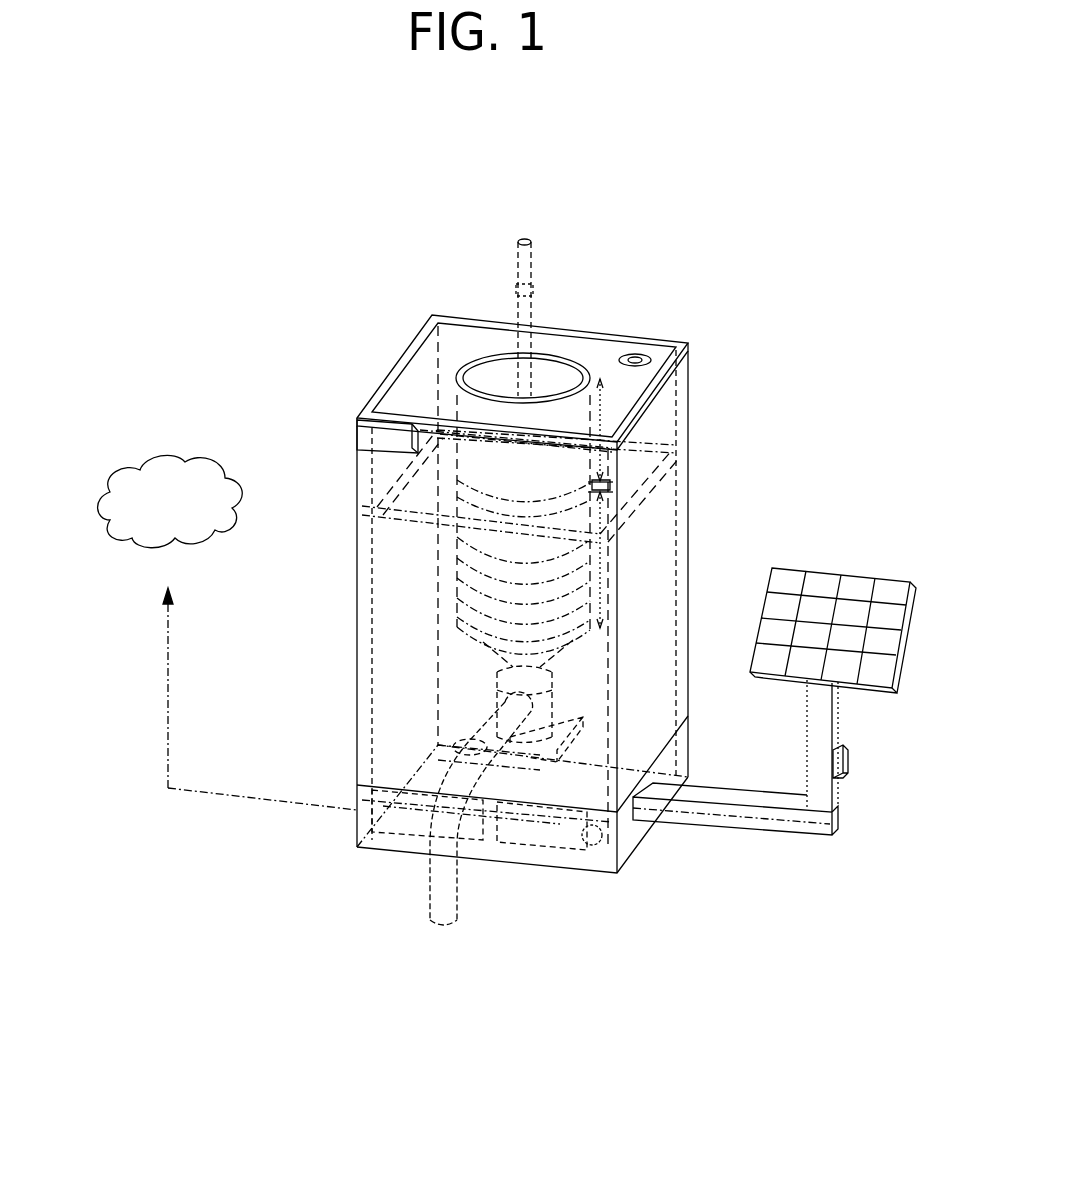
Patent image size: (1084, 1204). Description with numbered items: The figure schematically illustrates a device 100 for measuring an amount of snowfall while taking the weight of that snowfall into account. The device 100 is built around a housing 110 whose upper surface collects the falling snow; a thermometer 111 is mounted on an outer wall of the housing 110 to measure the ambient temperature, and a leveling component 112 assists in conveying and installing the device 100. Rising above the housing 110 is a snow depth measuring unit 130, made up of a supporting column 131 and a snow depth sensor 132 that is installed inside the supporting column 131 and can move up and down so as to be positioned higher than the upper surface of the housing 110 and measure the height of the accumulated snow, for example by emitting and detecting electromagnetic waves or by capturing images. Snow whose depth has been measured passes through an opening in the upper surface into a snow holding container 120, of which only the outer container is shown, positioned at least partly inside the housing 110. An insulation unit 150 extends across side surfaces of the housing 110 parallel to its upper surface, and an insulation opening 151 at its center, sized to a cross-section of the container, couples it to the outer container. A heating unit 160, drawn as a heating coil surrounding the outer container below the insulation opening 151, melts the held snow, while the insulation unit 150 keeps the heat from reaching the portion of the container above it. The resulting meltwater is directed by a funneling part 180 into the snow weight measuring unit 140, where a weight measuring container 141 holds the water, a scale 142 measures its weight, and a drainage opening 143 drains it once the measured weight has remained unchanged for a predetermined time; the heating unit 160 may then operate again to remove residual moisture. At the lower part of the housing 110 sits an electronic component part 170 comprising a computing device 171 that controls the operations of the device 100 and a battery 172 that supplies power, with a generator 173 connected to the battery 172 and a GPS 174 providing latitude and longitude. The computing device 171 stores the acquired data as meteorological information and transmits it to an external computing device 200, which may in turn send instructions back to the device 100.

The device for measuring an amount of snowfall 100 is at (312, 202).
The housing 110 is at (358, 418).
The thermometer 111 is at (357, 434).
The leveling component 112 is at (640, 352).
The snow holding container 120 is at (470, 404).
The snow depth measuring unit 130 is at (630, 295).
The supporting column 131 is at (530, 260).
The snow depth sensor 132 is at (530, 294).
The snow weight measuring unit 140 is at (152, 997).
The weight measuring container 141 is at (495, 707).
The scale 142 is at (440, 797).
The drainage opening 143 is at (443, 873).
The insulation unit 150 is at (676, 447).
The insulation opening 151 is at (612, 487).
The heating unit 160 is at (500, 657).
The electronic component part 170 is at (514, 978).
The computing device 171 is at (468, 833).
The battery 172 is at (560, 850).
The generator 173 is at (777, 653).
The GPS 174 is at (847, 763).
The funneling part 180 is at (500, 660).
The external computing device 200 is at (137, 447).